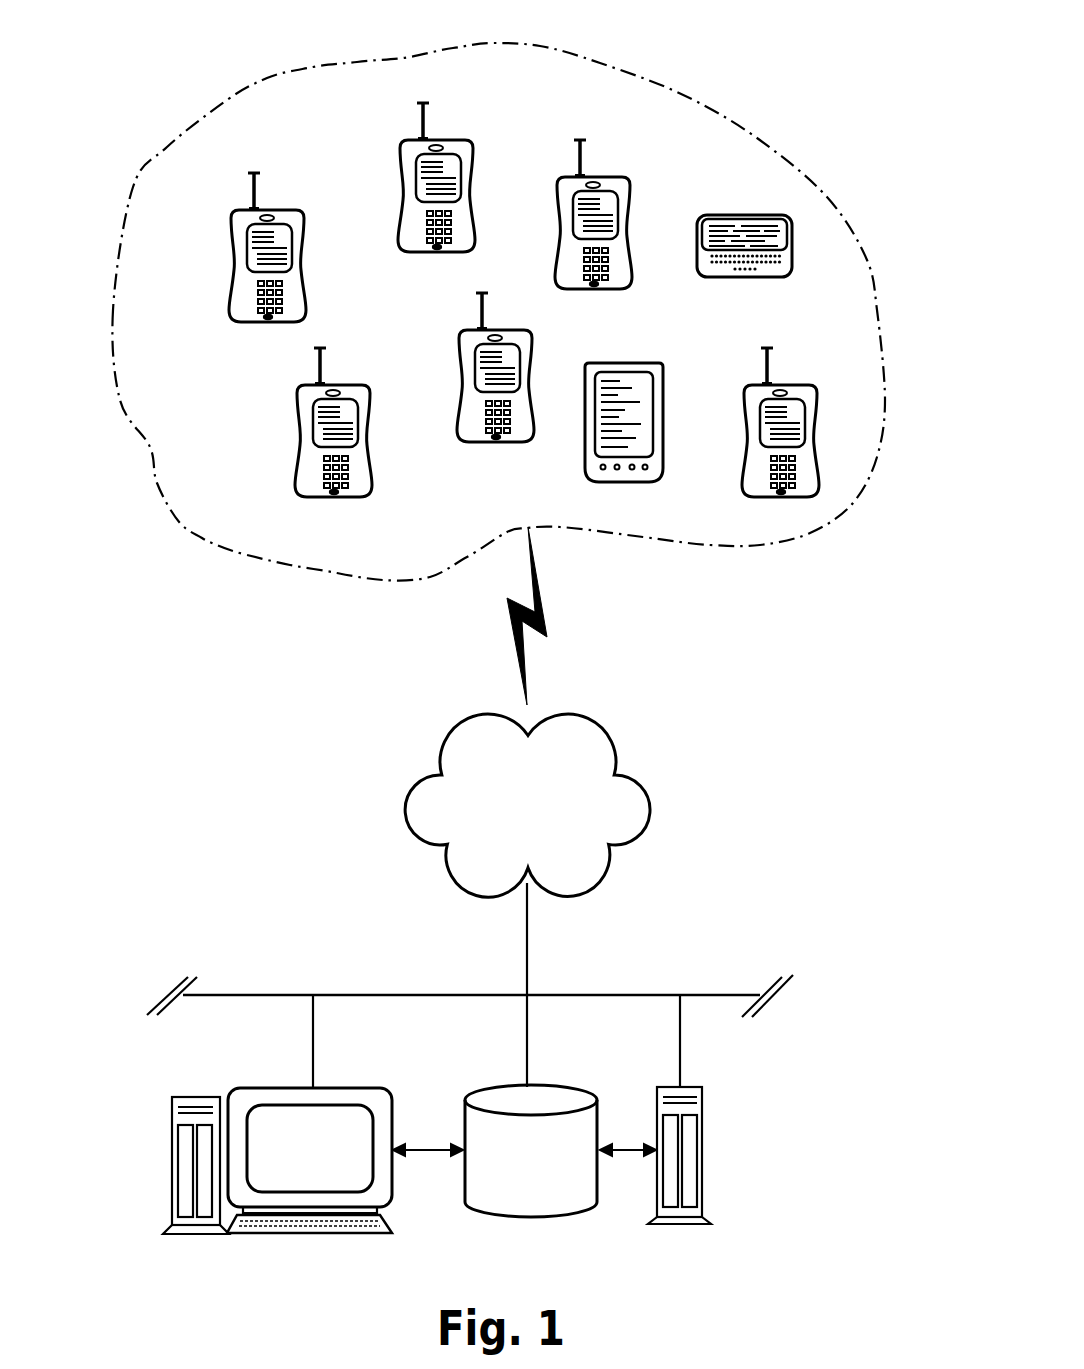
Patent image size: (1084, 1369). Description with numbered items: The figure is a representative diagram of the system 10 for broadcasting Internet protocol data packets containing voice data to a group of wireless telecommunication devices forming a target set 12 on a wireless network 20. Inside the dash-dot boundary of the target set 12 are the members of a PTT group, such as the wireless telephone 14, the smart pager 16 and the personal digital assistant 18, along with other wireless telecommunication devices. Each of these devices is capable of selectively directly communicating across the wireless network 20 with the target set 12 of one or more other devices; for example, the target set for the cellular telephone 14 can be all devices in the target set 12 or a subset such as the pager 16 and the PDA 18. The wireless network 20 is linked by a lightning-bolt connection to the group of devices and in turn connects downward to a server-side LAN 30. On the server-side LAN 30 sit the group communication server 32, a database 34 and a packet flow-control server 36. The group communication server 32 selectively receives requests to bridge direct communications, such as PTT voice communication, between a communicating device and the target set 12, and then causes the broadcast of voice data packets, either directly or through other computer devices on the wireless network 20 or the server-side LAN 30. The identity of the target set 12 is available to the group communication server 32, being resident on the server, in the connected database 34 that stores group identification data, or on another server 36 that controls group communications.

The system 10 is at (810, 73).
The target set 12 is at (181, 556).
The wireless telephone 14 is at (460, 140).
The smart pager 16 is at (746, 278).
The personal digital assistant 18 is at (585, 441).
The wireless network 20 is at (650, 806).
The server-side LAN 30 is at (273, 995).
The group communication server 32 is at (279, 1088).
The database 34 is at (463, 1183).
The packet flow-control server 36 is at (703, 1197).